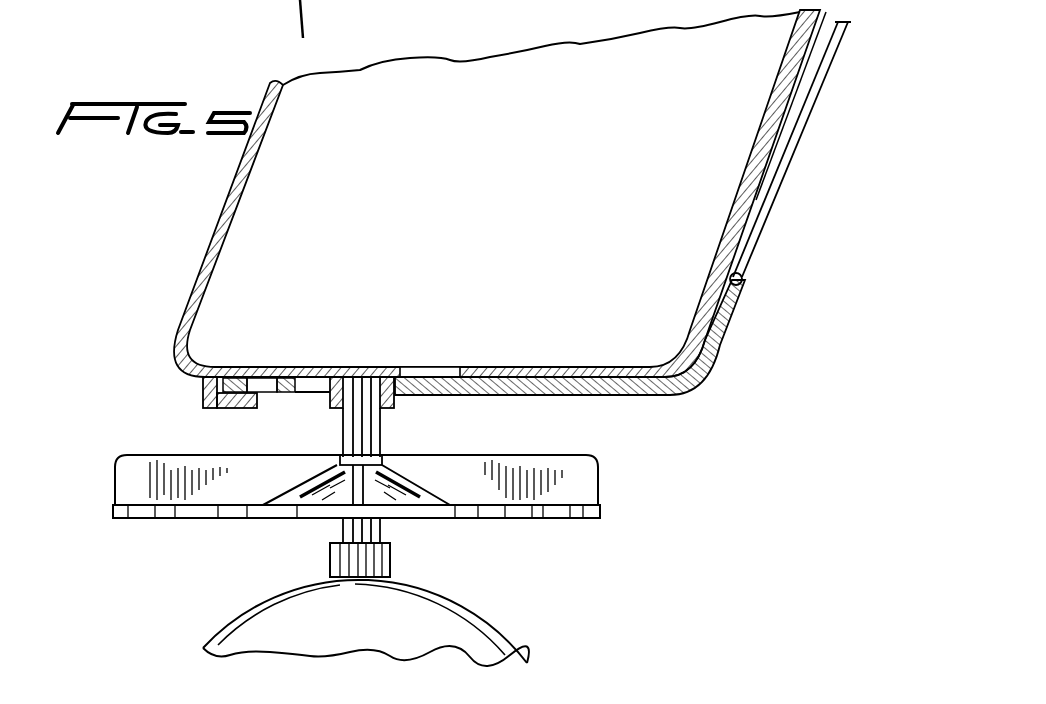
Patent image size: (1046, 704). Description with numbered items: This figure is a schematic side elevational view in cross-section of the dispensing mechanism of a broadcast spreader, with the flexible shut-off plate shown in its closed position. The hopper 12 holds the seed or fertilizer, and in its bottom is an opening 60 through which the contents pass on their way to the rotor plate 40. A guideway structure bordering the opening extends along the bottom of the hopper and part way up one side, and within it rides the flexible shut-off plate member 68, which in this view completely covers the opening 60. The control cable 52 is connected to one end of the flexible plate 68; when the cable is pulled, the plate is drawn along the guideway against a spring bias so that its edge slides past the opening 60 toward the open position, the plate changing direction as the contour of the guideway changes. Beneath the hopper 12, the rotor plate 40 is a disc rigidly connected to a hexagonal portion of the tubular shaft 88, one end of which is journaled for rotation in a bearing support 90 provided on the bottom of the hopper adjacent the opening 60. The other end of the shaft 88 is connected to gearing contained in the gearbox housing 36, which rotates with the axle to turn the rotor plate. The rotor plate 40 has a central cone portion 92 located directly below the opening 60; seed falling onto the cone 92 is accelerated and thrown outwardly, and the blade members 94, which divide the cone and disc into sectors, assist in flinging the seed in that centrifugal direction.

The hopper 12 is at (240, 213).
The gearbox housing 36 is at (450, 628).
The rotor plate 40 is at (537, 512).
The control cable 52 is at (820, 97).
The opening 60 is at (433, 366).
The flexible shut-off plate member 68 is at (637, 393).
The tubular shaft 88 is at (367, 430).
The bearing support 90 is at (327, 397).
The central cone portion 92 is at (342, 497).
The blade members 94 is at (130, 463).